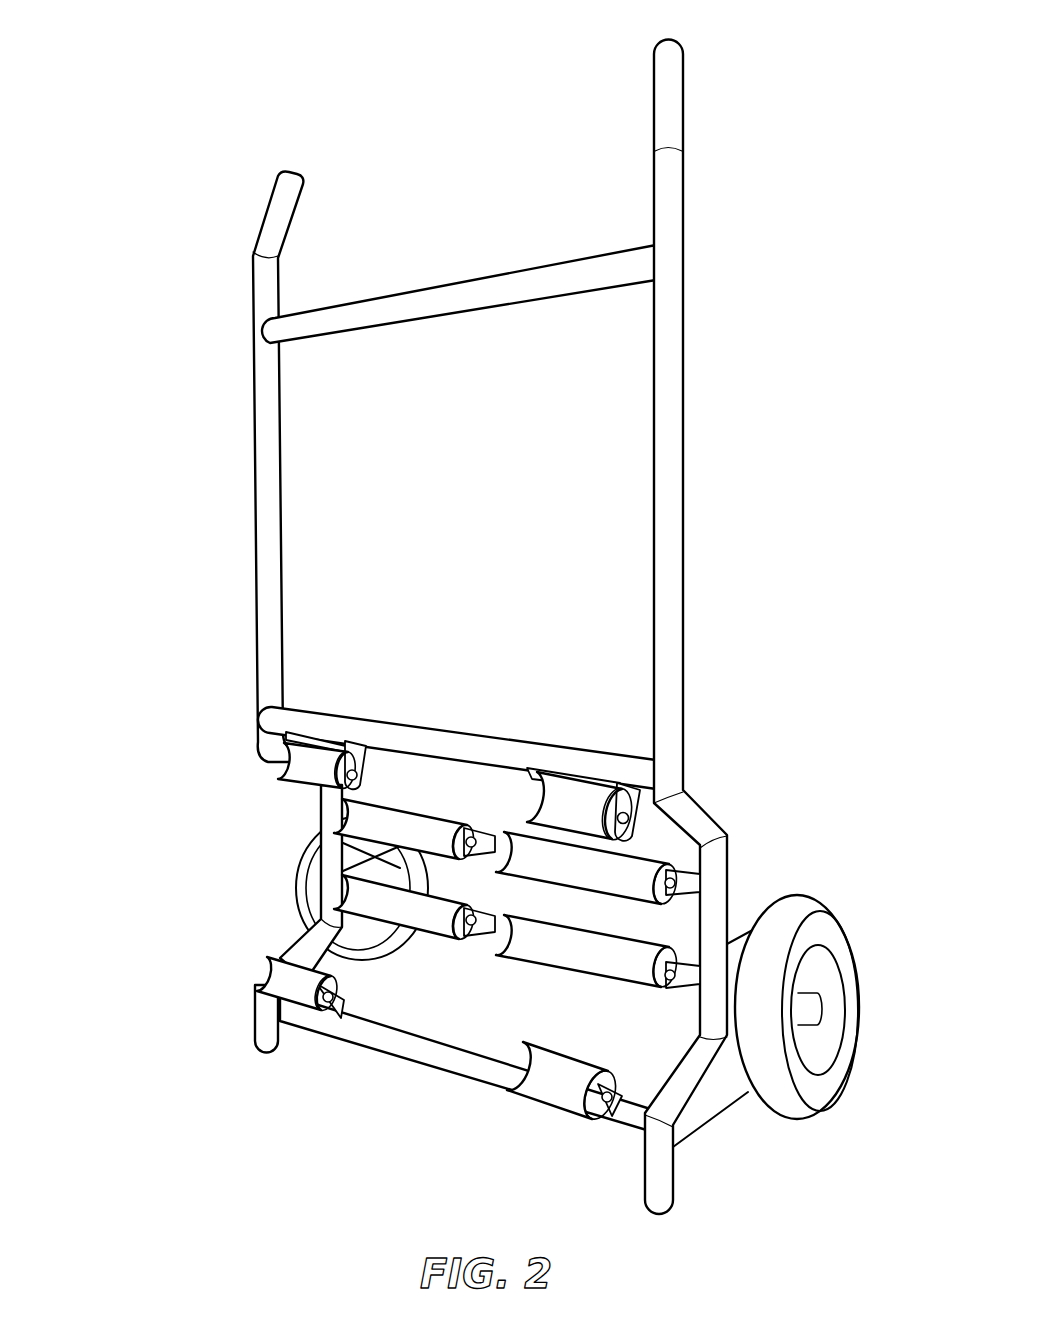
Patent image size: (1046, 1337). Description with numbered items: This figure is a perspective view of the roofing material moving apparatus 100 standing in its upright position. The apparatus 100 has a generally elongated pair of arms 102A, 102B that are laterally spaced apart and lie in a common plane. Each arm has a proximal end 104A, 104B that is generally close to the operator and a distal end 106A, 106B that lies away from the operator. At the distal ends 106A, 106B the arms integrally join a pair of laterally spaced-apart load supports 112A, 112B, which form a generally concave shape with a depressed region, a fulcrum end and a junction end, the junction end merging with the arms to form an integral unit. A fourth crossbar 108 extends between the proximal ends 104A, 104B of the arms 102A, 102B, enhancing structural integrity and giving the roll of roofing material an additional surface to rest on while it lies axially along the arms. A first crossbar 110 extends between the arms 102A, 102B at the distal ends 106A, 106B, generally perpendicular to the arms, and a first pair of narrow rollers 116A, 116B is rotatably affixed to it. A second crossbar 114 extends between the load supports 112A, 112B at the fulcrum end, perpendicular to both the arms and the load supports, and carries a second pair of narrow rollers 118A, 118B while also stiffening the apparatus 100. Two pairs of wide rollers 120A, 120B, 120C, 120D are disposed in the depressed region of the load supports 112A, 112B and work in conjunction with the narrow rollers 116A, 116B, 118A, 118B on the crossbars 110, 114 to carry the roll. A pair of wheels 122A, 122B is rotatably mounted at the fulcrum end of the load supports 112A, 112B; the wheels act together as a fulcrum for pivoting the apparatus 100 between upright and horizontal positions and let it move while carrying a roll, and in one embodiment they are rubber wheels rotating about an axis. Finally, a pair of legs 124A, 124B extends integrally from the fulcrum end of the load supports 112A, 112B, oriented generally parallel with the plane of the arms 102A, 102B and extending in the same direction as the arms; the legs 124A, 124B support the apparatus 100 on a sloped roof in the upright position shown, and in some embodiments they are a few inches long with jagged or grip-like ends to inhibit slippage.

The roofing material moving apparatus 100 is at (169, 192).
The arm 102A is at (226, 494).
The arm 102B is at (710, 493).
The proximal end 104A is at (277, 233).
The proximal end 104B is at (668, 90).
The distal end 106A is at (268, 630).
The distal end 106B is at (683, 622).
The fourth crossbar 108 is at (457, 295).
The first crossbar 110 is at (457, 752).
The load support 112A is at (260, 933).
The load support 112B is at (752, 831).
The second crossbar 114 is at (418, 1050).
The narrow roller 116A is at (333, 760).
The narrow roller 116B is at (575, 805).
The narrow roller 118A is at (300, 1000).
The narrow roller 118B is at (555, 1090).
The wide roller 120A is at (432, 835).
The wide roller 120B is at (580, 870).
The wide roller 120C is at (423, 920).
The wide roller 120D is at (565, 955).
The wheel 122A is at (305, 880).
The wheel 122B is at (818, 908).
The leg 124A is at (262, 1025).
The leg 124B is at (662, 1192).